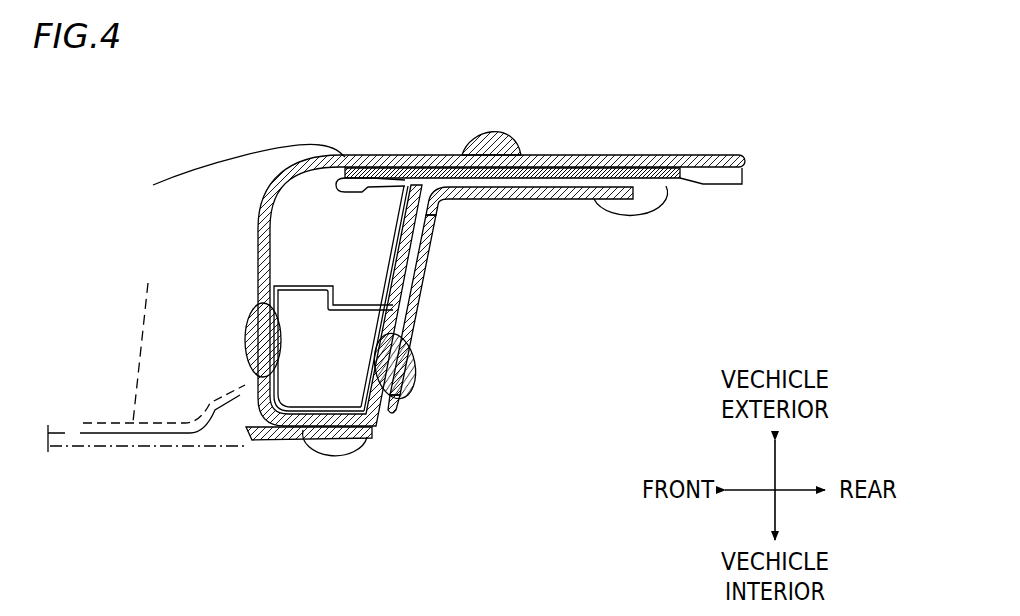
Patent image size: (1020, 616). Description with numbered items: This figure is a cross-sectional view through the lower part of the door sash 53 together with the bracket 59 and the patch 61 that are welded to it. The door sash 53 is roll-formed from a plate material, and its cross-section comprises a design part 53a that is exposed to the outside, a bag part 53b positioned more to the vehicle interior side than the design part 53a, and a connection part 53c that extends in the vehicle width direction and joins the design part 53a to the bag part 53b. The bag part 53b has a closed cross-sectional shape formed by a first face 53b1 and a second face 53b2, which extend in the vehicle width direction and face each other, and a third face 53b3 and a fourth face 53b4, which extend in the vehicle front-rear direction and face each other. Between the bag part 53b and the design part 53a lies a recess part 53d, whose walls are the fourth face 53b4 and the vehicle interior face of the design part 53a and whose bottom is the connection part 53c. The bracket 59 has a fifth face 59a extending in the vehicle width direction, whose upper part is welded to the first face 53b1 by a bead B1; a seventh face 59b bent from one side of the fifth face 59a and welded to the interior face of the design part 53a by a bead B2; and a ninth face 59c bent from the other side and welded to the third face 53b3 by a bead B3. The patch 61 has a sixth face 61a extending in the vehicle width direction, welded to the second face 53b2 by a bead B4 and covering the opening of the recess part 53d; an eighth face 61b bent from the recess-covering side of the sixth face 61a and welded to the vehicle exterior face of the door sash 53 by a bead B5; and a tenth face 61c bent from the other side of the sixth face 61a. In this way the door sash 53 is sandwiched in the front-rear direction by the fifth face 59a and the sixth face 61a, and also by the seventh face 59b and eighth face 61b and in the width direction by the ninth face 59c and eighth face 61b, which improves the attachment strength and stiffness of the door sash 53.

The door sash 53 is at (326, 27).
The design part 53a is at (412, 222).
The bag part 53b is at (343, 299).
The connection part 53c is at (398, 250).
The recess part 53d is at (325, 233).
The first face 53b1 is at (405, 260).
The second face 53b2 is at (268, 404).
The third face 53b3 is at (312, 402).
The fourth face 53b4 is at (268, 290).
The bracket 59 is at (590, 265).
The fifth face 59a is at (433, 293).
The seventh face 59b is at (584, 198).
The ninth face 59c is at (390, 420).
The patch 61 is at (105, 177).
The sixth face 61a is at (258, 226).
The eighth face 61b is at (228, 172).
The tenth face 61c is at (150, 277).
The bead B1 is at (410, 362).
The bead B2 is at (646, 205).
The bead B3 is at (363, 443).
The bead B4 is at (256, 345).
The bead B5 is at (355, 157).